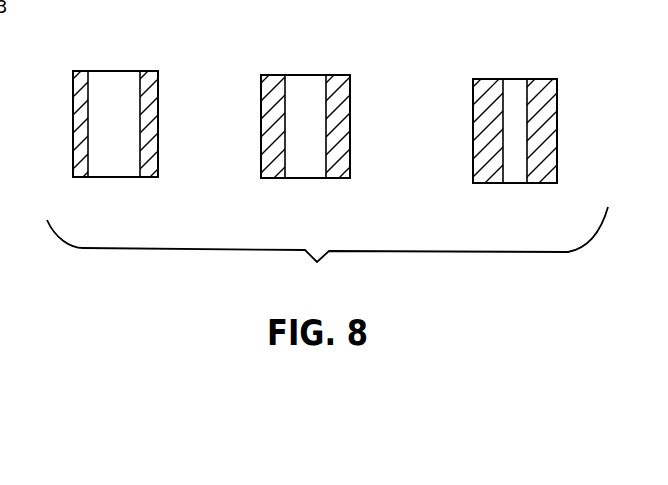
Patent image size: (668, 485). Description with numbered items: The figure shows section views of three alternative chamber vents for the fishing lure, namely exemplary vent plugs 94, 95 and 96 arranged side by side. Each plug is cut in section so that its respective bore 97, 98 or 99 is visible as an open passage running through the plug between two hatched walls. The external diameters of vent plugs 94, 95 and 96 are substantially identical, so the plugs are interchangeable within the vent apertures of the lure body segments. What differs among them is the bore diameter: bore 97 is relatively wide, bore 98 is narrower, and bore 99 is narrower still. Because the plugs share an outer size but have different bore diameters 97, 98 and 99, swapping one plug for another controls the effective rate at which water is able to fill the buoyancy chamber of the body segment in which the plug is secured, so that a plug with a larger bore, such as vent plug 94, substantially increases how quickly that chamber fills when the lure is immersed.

The vent plug 94 is at (158, 93).
The vent plug 95 is at (350, 100).
The vent plug 96 is at (557, 123).
The bore 97 is at (140, 88).
The bore 98 is at (323, 106).
The bore 99 is at (524, 100).